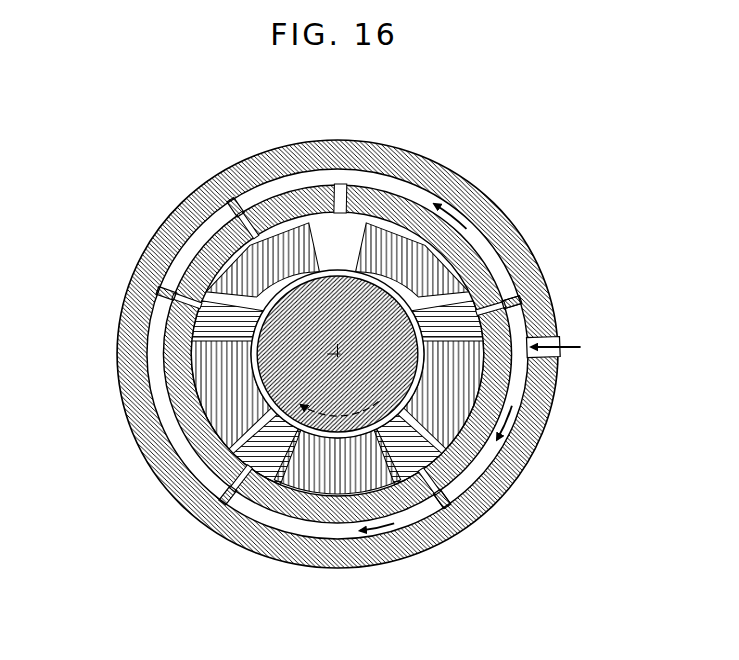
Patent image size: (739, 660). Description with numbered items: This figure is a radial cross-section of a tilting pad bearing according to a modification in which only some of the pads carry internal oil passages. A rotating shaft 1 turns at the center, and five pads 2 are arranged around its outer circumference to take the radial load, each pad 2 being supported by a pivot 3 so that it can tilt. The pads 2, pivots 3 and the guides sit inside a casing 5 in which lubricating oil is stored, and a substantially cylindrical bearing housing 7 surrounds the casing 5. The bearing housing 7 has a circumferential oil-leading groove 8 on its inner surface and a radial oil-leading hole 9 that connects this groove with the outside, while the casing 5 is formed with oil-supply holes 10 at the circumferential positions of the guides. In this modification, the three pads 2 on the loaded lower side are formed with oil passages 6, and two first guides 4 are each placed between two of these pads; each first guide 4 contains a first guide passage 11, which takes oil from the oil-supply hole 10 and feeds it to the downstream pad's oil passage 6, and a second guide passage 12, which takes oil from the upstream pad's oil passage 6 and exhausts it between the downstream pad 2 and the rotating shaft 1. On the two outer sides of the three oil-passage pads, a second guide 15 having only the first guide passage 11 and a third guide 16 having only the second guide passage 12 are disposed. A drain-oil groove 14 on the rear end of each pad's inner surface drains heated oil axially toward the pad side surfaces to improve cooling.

The rotating shaft 1 is at (352, 300).
The pad 2 is at (287, 227).
The pivot 3 is at (250, 228).
The guide 4 is at (462, 477).
The casing 5 is at (420, 200).
The oil passage 6 is at (304, 545).
The bearing housing 7 is at (512, 222).
The circumferential oil-leading groove 8 is at (478, 198).
The radial oil-leading hole 9 is at (548, 372).
The oil-supply hole 10 is at (437, 480).
The first guide passage 11 is at (540, 308).
The second guide passage 12 is at (180, 312).
The drain-oil groove 14 is at (250, 482).
The second guide 15 is at (500, 283).
The third guide 16 is at (207, 305).